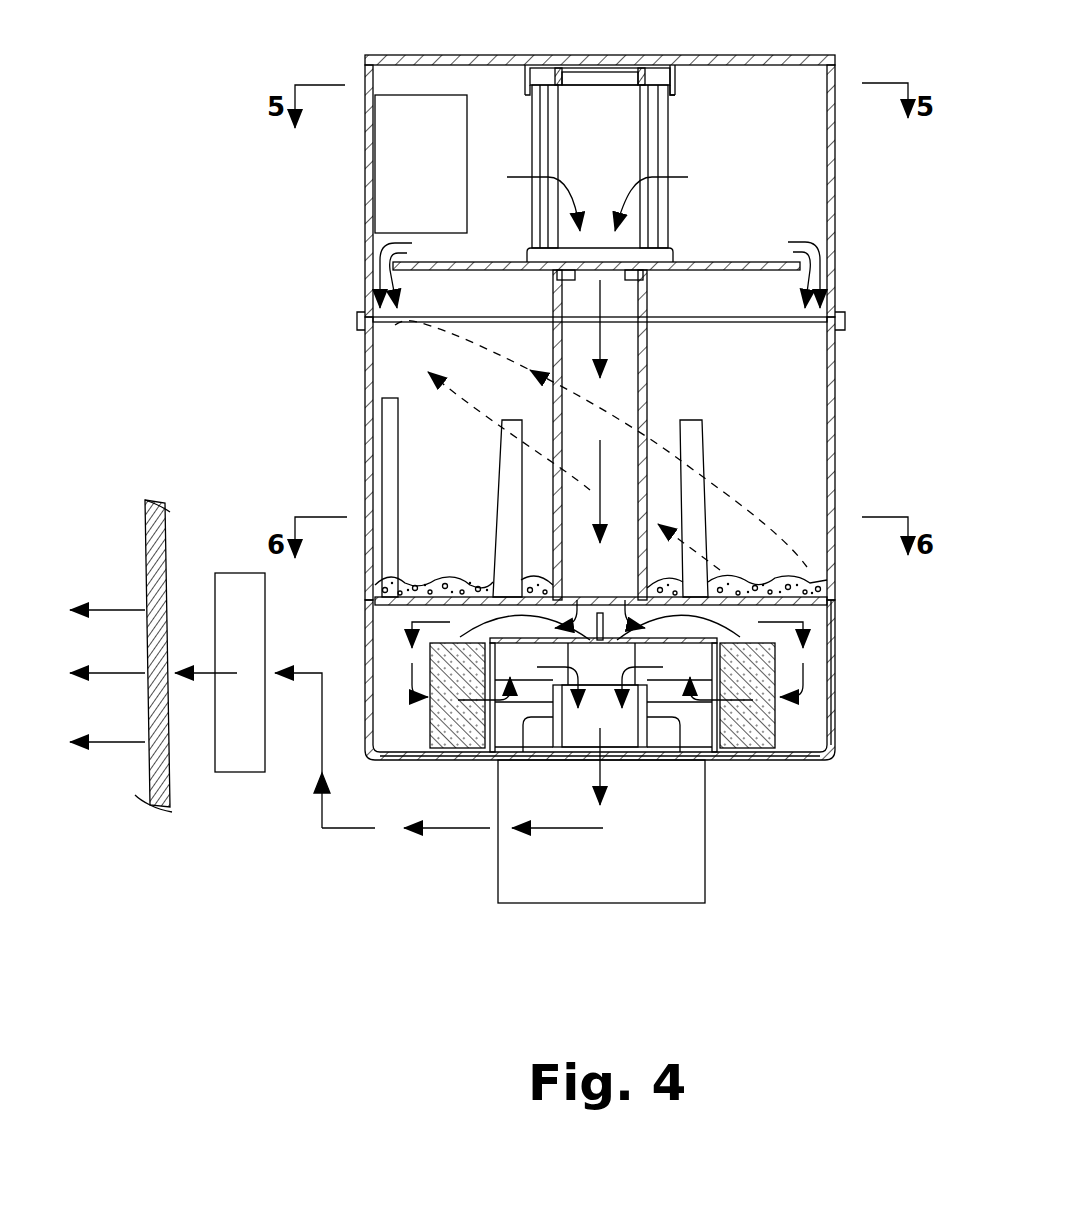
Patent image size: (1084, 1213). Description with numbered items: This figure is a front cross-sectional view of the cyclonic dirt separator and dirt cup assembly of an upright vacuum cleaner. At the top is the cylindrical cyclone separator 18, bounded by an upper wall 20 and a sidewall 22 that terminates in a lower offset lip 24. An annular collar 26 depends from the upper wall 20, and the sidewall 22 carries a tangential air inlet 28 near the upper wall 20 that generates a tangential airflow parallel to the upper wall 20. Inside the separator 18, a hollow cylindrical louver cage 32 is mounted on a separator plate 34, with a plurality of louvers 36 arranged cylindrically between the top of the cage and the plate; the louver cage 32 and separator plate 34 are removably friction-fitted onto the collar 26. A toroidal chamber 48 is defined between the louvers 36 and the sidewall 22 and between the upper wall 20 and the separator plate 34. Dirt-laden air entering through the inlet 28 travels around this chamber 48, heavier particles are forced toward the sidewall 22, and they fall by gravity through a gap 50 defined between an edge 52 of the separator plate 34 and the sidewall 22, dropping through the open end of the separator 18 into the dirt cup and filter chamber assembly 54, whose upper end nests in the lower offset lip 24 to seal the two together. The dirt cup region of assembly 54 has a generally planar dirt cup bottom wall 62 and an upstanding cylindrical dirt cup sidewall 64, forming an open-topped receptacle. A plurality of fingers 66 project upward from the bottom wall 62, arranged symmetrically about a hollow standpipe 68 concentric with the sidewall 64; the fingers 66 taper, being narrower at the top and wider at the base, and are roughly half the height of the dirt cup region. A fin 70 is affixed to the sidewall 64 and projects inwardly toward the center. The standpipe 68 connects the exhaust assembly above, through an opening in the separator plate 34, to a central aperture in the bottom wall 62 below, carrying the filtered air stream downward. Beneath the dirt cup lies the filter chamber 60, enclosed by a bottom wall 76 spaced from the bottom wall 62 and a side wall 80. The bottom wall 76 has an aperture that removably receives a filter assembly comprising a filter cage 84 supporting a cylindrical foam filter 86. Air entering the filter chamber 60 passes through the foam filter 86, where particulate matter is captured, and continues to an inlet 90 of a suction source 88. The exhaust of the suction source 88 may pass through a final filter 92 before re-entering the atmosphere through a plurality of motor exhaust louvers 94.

The cyclone separator 18 is at (609, 462).
The upper wall 20 is at (503, 55).
The sidewall 22 is at (835, 290).
The lower offset lip 24 is at (843, 322).
The annular collar 26 is at (677, 68).
The tangential air inlet 28 is at (397, 176).
The louver cage 32 is at (650, 75).
The separator plate 34 is at (700, 262).
The louvers 36 is at (658, 128).
The toroidal chamber 48 is at (791, 222).
The gap 50 is at (825, 260).
The edge 52 is at (393, 267).
The dirt cup and filter chamber assembly 54 is at (837, 400).
The filter chamber 60 is at (647, 700).
The dirt cup bottom wall 62 is at (800, 605).
The dirt cup sidewall 64 is at (837, 508).
The fingers 66 is at (495, 508).
The hollow standpipe 68 is at (553, 338).
The fin 70 is at (388, 447).
The bottom wall 76 is at (783, 760).
The side wall 80 is at (835, 687).
The filter cage 84 is at (720, 730).
The foam filter 86 is at (775, 727).
The suction source 88 is at (673, 867).
The inlet 90 is at (625, 760).
The final filter 92 is at (248, 760).
The motor exhaust louvers 94 is at (147, 563).